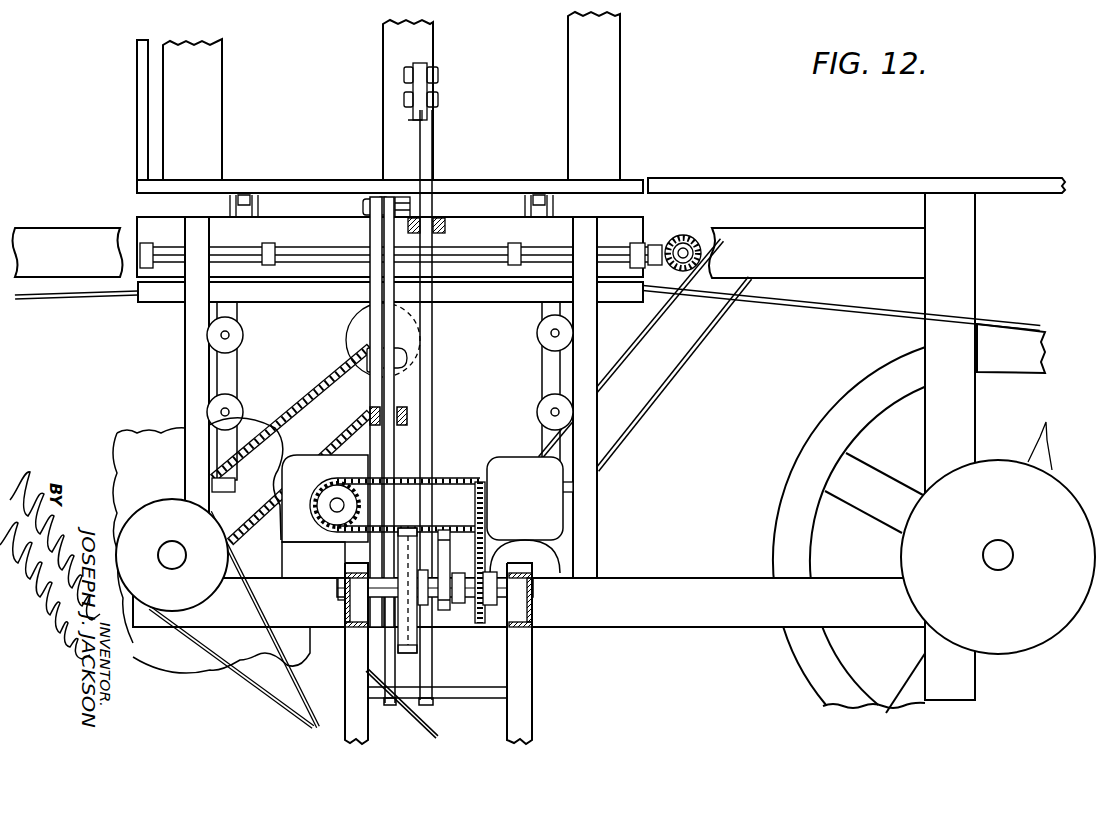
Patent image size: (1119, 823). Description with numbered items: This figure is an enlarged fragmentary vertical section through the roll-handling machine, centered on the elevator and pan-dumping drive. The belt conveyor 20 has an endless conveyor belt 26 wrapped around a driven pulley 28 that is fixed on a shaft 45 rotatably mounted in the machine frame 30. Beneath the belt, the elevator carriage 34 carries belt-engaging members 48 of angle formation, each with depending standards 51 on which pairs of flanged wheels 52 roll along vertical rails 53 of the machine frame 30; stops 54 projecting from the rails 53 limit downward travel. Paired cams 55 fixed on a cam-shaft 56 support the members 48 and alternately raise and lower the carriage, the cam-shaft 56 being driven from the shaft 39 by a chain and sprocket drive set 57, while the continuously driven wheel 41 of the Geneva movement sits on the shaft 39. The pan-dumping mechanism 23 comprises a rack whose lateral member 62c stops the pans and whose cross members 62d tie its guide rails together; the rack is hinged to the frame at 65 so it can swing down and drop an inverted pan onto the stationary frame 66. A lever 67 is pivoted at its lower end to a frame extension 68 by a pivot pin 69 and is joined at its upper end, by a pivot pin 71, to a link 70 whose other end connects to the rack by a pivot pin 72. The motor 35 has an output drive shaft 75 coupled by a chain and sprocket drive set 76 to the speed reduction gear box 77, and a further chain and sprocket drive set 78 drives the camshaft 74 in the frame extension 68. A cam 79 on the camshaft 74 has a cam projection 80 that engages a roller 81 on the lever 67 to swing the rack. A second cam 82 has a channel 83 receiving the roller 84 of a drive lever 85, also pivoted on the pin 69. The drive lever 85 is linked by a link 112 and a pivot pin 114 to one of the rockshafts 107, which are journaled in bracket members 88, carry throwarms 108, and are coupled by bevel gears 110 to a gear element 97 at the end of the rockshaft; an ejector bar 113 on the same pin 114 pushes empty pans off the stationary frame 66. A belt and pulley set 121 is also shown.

The belt conveyor 20 is at (1035, 318).
The dumping mechanism 23 is at (423, 79).
The conveyor belt 26 is at (110, 298).
The driven pulley 28 is at (810, 470).
The machine frame 30 is at (60, 246).
The elevator carriage 34 is at (248, 303).
The motor 35 is at (312, 470).
The shaft 39 is at (168, 556).
The continuously driven wheel 41 is at (211, 539).
The shaft 45 is at (997, 556).
The belt-engaging members 48 is at (468, 294).
The depending standards 51 is at (227, 372).
The flanged wheels 52 is at (236, 340).
The vertical rails 53 is at (200, 397).
The stops 54 is at (234, 489).
The cams 55 is at (358, 329).
The cam-shaft 56 is at (397, 372).
The chain and sprocket drive set 57 is at (291, 409).
The lateral member 62c is at (142, 137).
The cross members 62d is at (194, 93).
The hinge 65 is at (250, 194).
The stationary frame 66 is at (502, 232).
The lever 67 is at (433, 430).
The frame extension 68 is at (359, 720).
The pivot pin 69 is at (436, 703).
The link 70 is at (419, 66).
The pivot pin 71 is at (438, 100).
The pivot pin 72 is at (405, 73).
The camshaft 74 is at (472, 604).
The output drive shaft 75 is at (334, 508).
The chain and sprocket drive set 76 is at (460, 482).
The speed reduction gear box 77 is at (514, 478).
The chain and sprocket drive set 78 is at (491, 549).
The cam 79 is at (448, 580).
The cam projection 80 is at (445, 530).
The roller 81 is at (444, 606).
The cam 82 is at (406, 655).
The channel 83 is at (403, 527).
The roller 84 is at (400, 612).
The drive lever 85 is at (392, 486).
The bracket members 88 is at (145, 252).
The bevel gear 97 is at (690, 240).
The rockshafts 107 is at (329, 248).
The throwarms 108 is at (266, 247).
The bevel gears 110 is at (661, 242).
The link 112 is at (368, 292).
The ejector bar 113 is at (413, 206).
The pivot pin 114 is at (364, 213).
The belt and pulley set 121 is at (693, 345).